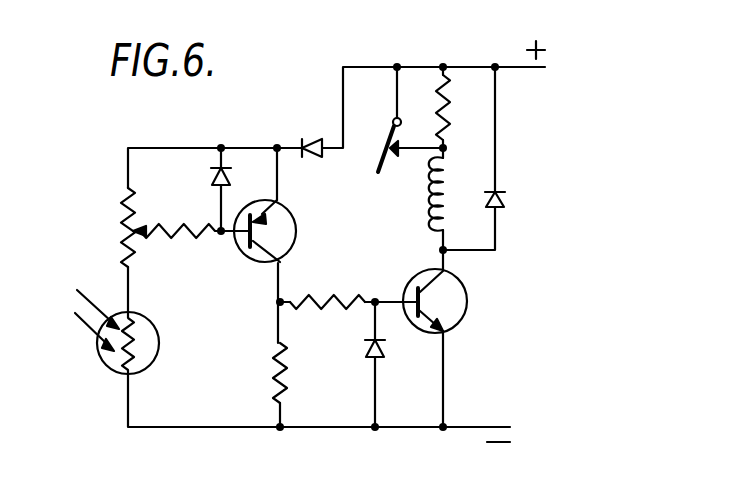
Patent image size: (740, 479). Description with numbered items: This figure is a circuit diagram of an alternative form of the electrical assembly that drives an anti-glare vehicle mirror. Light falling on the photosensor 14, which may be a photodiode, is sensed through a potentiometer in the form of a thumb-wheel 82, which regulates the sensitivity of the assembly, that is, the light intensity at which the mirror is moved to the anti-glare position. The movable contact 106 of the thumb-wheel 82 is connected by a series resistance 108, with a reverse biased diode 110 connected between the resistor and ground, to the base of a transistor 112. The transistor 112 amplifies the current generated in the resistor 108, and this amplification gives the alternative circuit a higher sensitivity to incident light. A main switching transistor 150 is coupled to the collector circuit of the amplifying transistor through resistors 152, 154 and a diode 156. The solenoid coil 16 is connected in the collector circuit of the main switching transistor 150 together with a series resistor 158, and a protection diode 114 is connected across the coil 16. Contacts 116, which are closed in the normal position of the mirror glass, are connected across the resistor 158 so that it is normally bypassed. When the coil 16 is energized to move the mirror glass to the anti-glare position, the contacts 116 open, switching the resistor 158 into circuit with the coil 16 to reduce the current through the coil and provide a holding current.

The photosensor 14 is at (108, 368).
The solenoid coil 16 is at (447, 200).
The thumb-wheel 82 is at (126, 204).
The movable contact 106 is at (140, 229).
The series resistance 108 is at (185, 240).
The reverse biased diode 110 is at (216, 173).
The transistor 112 is at (284, 226).
The protection diode 114 is at (503, 198).
The contacts 116 is at (380, 147).
The main switching transistor 150 is at (456, 324).
The resistor 152 is at (273, 367).
The resistor 154 is at (330, 280).
The diode 156 is at (366, 344).
The series resistor 158 is at (433, 92).